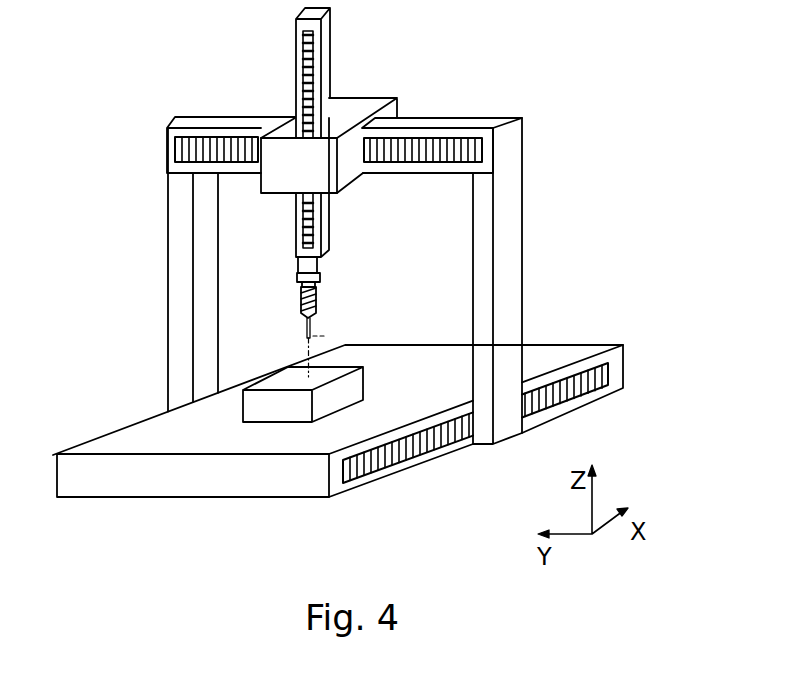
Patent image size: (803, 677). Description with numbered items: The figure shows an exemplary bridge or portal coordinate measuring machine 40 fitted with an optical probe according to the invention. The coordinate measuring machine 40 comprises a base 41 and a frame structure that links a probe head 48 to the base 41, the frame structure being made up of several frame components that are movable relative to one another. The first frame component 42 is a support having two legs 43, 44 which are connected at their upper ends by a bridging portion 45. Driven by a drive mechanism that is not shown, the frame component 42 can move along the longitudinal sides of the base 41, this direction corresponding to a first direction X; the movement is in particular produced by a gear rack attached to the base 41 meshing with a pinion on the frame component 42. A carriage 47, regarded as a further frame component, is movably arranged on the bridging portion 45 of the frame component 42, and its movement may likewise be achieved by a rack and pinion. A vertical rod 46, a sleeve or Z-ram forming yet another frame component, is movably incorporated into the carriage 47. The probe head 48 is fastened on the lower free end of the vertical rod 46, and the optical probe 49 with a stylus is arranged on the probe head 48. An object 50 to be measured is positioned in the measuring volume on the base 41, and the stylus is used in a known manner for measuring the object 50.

The coordinate measuring machine 40 is at (542, 35).
The base 41 is at (117, 440).
The first frame component 42 is at (422, 88).
The leg 43 is at (512, 207).
The leg 44 is at (184, 238).
The bridging portion 45 is at (227, 122).
The vertical rod 46 is at (298, 55).
The carriage 47 is at (352, 103).
The probe head 48 is at (306, 267).
The optical probe 49 is at (315, 305).
The object 50 is at (300, 383).